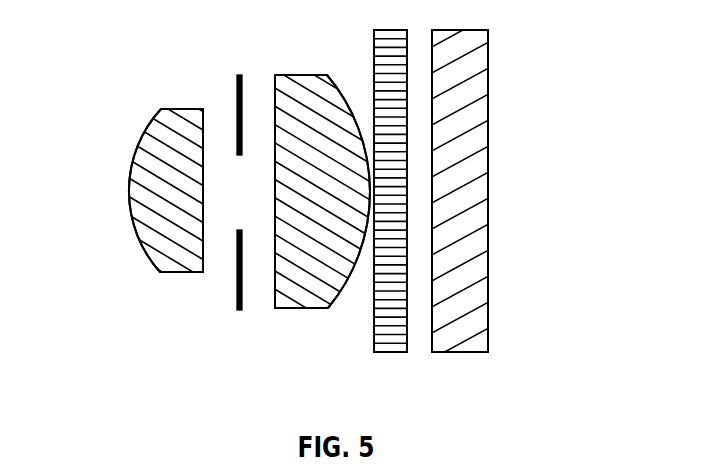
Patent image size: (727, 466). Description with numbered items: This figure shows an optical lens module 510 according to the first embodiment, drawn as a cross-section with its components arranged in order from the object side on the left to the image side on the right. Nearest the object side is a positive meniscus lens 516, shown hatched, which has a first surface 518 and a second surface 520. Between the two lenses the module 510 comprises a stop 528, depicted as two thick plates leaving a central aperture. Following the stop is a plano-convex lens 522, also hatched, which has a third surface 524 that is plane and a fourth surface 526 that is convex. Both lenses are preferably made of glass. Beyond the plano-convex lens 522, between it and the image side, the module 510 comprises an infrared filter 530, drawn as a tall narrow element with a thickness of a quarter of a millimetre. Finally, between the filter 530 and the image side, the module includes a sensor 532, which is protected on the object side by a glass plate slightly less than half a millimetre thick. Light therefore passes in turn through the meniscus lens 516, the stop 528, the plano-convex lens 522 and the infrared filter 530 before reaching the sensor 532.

The module 510 is at (98, 54).
The positive meniscus lens 516 is at (180, 260).
The first surface 518 is at (152, 116).
The second surface 520 is at (200, 190).
The plano-convex lens 522 is at (300, 297).
The third, plane, surface 524 is at (273, 167).
The fourth surface 526 is at (328, 80).
The stop 528 is at (236, 301).
The infrared filter 530 is at (398, 337).
The sensor 532 is at (488, 108).